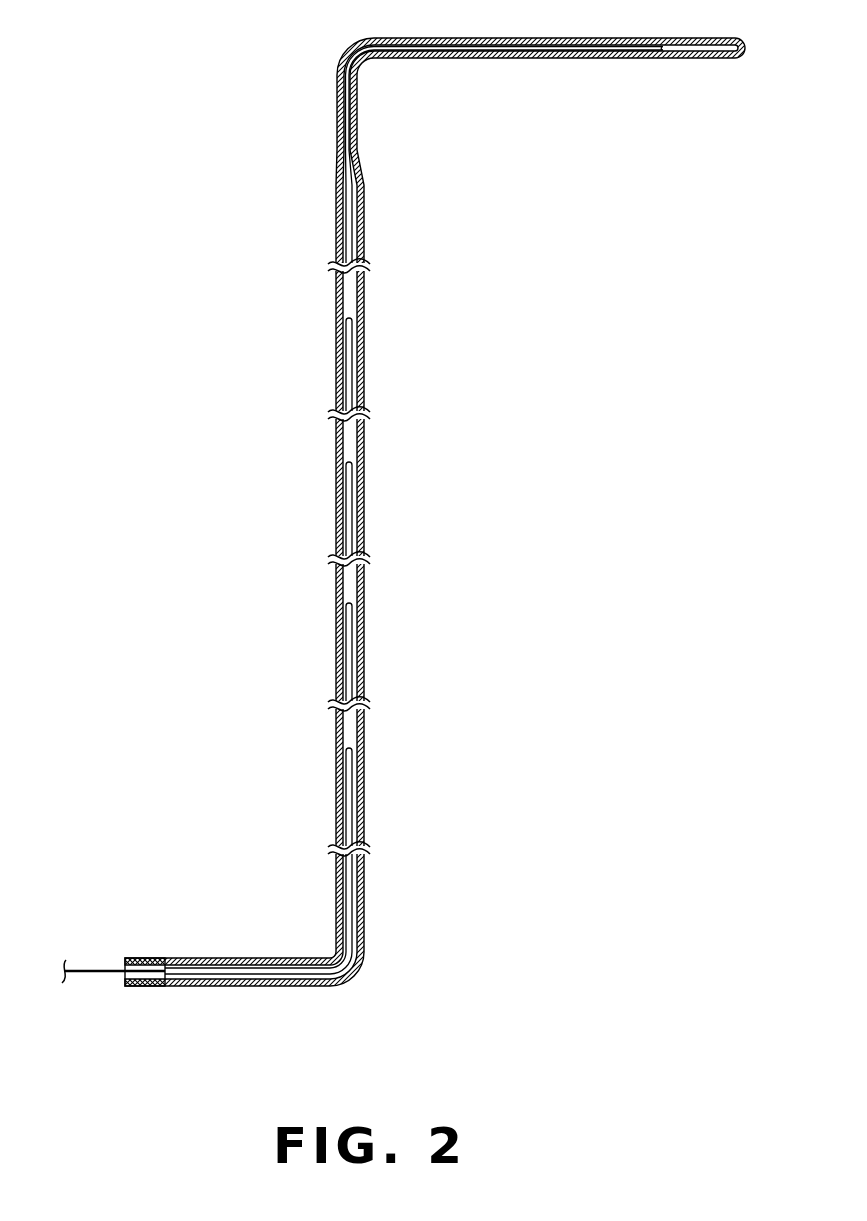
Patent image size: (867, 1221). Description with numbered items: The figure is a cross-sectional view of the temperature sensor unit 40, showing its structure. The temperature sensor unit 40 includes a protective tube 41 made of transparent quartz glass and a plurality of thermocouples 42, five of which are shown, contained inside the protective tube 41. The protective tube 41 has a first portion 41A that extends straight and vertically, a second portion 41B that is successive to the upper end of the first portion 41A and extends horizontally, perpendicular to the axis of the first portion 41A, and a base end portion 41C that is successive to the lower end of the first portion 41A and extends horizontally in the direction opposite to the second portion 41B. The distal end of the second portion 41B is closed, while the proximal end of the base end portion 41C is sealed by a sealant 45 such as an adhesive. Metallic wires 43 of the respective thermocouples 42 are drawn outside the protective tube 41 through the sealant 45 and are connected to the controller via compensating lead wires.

The temperature sensor unit 40 is at (310, 178).
The protective tube 41 is at (365, 229).
The first portion 41A is at (333, 452).
The second portion 41B is at (546, 58).
The base end portion 41C is at (208, 957).
The thermocouples 42 is at (653, 57).
The metallic wires 43 is at (82, 968).
The sealant 45 is at (138, 965).